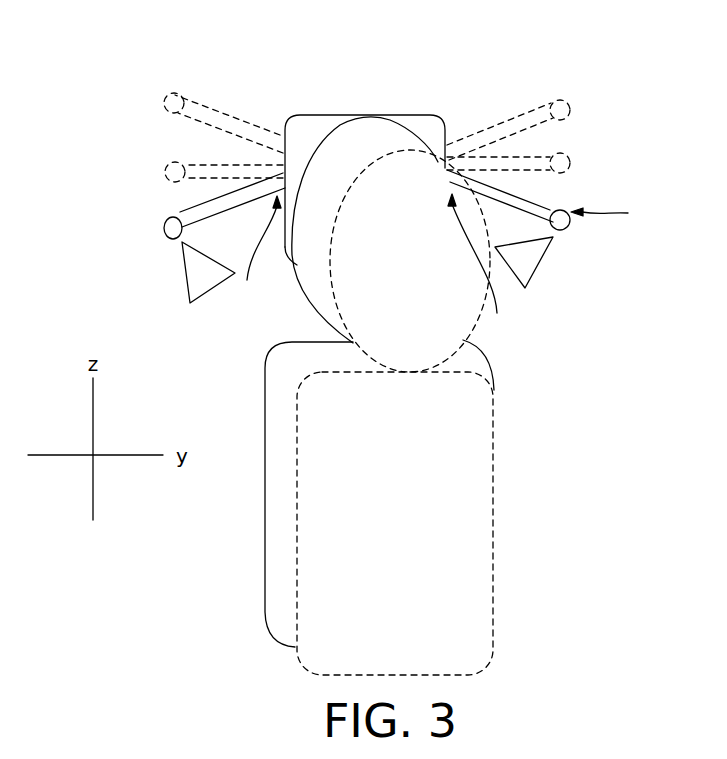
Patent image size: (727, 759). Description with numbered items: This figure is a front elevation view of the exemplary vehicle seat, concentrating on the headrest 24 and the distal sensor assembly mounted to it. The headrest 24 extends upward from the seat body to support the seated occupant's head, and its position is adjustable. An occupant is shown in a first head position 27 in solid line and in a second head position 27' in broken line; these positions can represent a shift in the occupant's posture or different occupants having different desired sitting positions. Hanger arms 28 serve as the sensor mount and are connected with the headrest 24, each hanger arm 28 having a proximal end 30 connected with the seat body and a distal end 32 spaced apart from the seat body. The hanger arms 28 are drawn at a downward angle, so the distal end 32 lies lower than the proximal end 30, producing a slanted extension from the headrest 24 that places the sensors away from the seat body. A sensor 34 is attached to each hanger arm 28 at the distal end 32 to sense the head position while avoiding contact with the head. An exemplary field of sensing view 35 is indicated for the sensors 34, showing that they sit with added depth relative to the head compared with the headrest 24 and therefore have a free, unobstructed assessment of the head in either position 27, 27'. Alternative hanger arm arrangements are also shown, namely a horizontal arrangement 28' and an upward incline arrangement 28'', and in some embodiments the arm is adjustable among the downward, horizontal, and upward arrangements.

The headrest 24 is at (300, 115).
The occupant's head 27 is at (365, 196).
The second head position 27' is at (410, 222).
The hanger arm 28 is at (370, 195).
The horizontal hanger arm arrangement 28' is at (377, 143).
The upward incline hanger arm arrangement 28'' is at (367, 94).
The proximal end 30 is at (372, 269).
The distal end 32 is at (615, 210).
The sensor 34 is at (163, 223).
The field of sensing view 35 is at (188, 283).